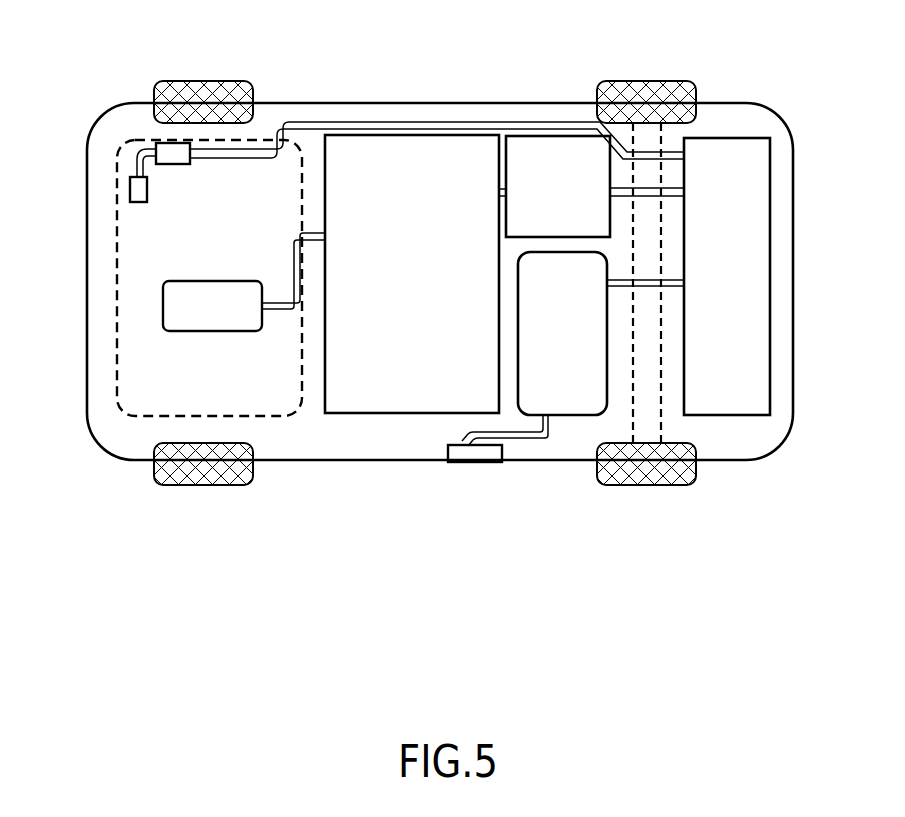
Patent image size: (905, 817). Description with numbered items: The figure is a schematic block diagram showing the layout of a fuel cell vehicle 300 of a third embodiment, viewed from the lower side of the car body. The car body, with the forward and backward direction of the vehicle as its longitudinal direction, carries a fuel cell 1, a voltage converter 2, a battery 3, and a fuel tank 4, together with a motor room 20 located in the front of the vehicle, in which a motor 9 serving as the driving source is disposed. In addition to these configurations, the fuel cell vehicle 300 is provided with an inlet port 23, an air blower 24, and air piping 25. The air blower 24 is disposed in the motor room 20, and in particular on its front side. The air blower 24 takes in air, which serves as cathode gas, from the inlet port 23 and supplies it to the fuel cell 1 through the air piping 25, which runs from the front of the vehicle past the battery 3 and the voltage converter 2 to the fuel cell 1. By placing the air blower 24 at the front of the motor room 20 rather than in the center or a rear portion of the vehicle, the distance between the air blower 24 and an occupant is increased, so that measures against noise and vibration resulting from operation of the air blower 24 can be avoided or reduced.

The fuel cell vehicle 300 is at (782, 96).
The fuel cell 1 is at (770, 176).
The voltage converter 2 is at (546, 136).
The battery 3 is at (417, 135).
The fuel tank 4 is at (565, 415).
The motor 9 is at (163, 300).
The motor room 20 is at (117, 243).
The inlet port 23 is at (130, 190).
The air blower 24 is at (156, 148).
The air piping 25 is at (143, 165).